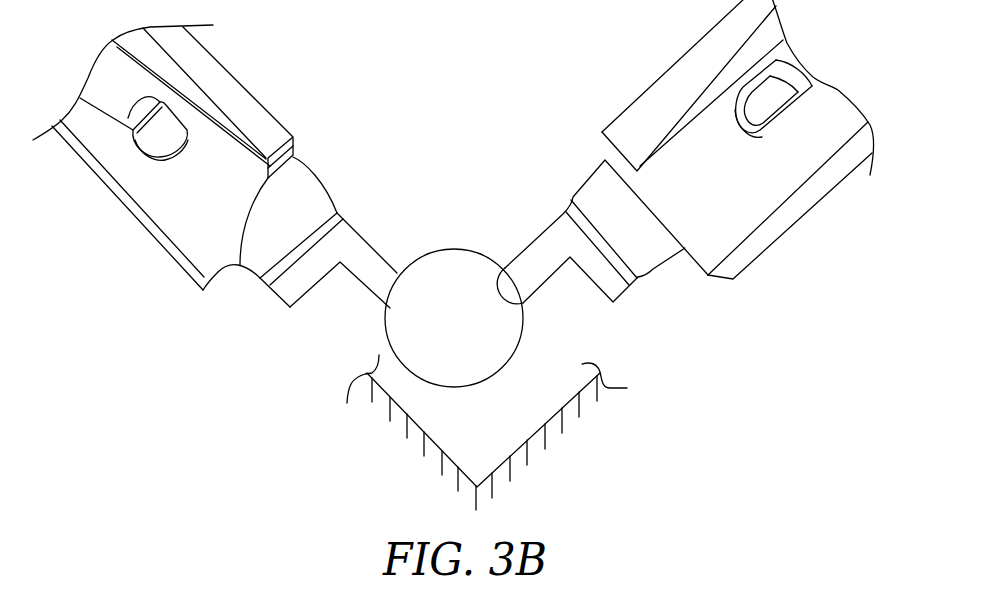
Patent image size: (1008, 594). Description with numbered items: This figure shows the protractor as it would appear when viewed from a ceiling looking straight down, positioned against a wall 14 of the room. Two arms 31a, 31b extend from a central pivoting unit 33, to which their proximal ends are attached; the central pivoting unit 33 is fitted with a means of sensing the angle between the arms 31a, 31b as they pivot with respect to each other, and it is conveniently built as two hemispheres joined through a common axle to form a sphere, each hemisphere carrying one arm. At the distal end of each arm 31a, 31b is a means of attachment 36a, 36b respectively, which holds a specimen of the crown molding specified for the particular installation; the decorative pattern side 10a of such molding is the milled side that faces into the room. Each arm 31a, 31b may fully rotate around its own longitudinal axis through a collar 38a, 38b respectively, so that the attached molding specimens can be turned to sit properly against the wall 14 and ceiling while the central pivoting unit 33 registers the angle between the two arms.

The decorative pattern side 10a is at (662, 76).
The wall 14 is at (531, 443).
The arm 31a is at (568, 275).
The arm 31b is at (343, 294).
The central pivoting unit 33 is at (455, 247).
The means of attachment 36a is at (818, 141).
The means of attachment 36b is at (150, 197).
The collar 38a is at (602, 254).
The collar 38b is at (328, 269).